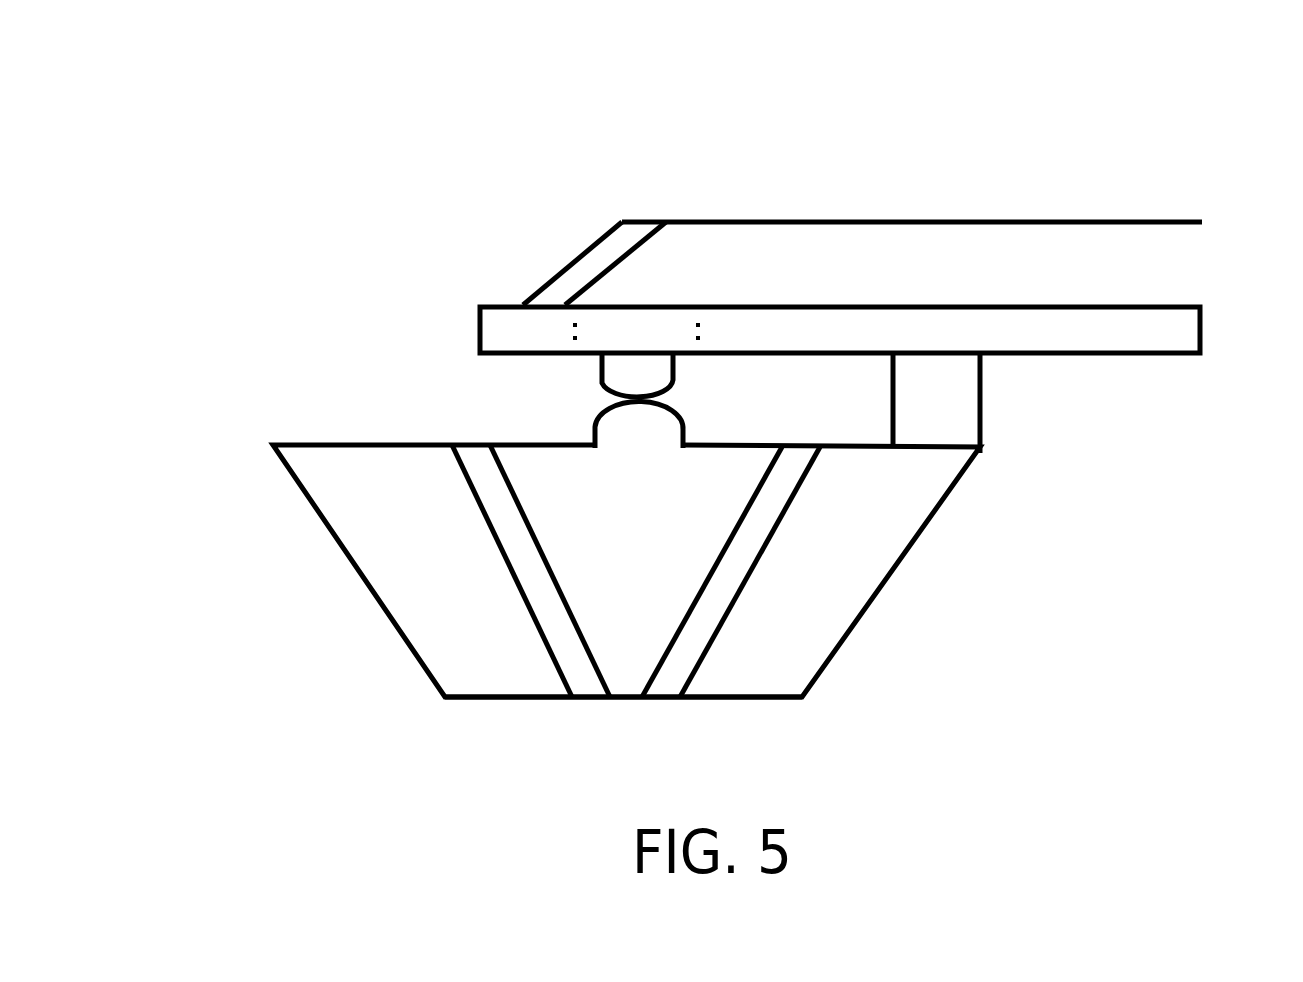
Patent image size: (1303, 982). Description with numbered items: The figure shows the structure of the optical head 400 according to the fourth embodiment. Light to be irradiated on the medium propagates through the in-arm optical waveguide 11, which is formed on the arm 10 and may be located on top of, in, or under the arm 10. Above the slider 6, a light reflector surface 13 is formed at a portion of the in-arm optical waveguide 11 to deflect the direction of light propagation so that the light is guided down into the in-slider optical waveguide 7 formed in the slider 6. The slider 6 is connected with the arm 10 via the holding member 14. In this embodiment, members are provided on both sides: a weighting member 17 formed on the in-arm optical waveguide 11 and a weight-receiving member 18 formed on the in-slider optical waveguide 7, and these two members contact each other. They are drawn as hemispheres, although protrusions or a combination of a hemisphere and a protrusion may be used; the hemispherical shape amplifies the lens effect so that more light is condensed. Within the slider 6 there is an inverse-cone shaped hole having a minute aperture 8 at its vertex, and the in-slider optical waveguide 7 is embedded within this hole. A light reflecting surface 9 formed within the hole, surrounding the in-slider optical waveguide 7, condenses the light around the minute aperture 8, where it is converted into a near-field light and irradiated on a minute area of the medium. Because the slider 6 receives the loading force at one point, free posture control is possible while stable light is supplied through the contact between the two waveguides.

The optical head 400 is at (300, 222).
The in-arm optical waveguide 11 is at (1068, 237).
The light reflector surface 13 is at (572, 277).
The arm 10 is at (1122, 328).
The holding member 14 is at (957, 373).
The weighting member 17 is at (630, 380).
The weight-receiving member 18 is at (627, 420).
The slider 6 is at (435, 598).
The in-slider optical waveguide 7 is at (637, 537).
The light reflecting surface 9 is at (697, 628).
The minute aperture 8 is at (633, 697).